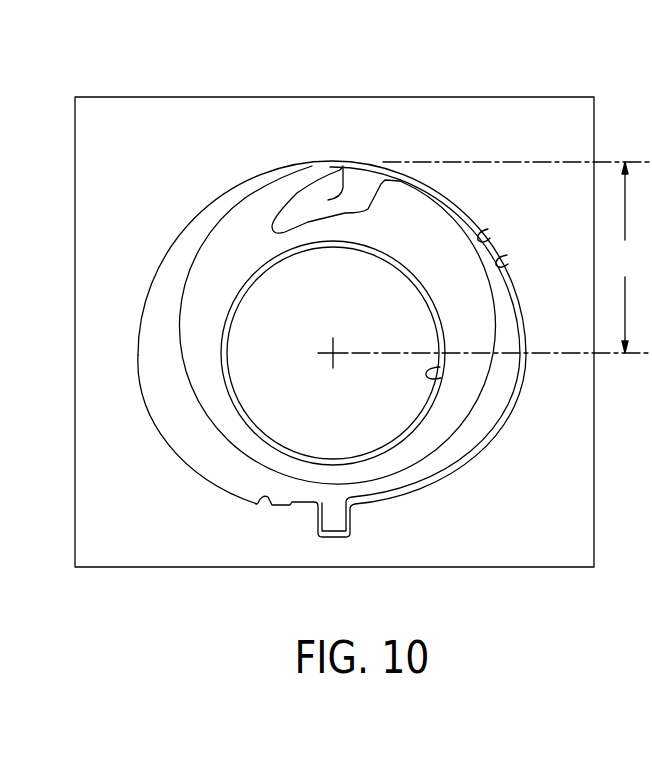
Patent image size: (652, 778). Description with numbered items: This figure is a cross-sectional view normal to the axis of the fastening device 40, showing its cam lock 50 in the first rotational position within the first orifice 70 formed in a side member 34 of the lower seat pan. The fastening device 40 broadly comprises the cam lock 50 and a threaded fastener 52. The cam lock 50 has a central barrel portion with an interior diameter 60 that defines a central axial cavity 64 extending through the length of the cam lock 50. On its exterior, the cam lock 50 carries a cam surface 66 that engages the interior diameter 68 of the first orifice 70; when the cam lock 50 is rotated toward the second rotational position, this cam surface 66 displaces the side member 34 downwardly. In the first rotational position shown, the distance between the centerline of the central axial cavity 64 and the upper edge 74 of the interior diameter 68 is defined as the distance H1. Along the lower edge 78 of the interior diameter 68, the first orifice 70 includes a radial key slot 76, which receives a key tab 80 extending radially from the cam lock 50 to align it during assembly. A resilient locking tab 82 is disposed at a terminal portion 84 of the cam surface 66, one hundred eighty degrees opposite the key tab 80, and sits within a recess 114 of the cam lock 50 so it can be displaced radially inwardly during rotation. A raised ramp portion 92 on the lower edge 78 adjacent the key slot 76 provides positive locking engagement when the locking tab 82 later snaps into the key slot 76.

The side member 34 is at (508, 538).
The fastening device 40 is at (495, 185).
The cam lock 50 is at (255, 452).
The threaded fastener 52 is at (402, 408).
The interior diameter 60 is at (433, 373).
The central axial cavity 64 is at (232, 393).
The cam surface 66 is at (195, 253).
The interior diameter 68 is at (506, 268).
The first orifice 70 is at (480, 240).
The upper edge 74 is at (299, 163).
The key slot 76 is at (325, 538).
The lower edge 78 is at (262, 498).
The key tab 80 is at (342, 508).
The locking tab 82 is at (323, 175).
The terminal portion 84 is at (278, 197).
The raised ramp portion 92 is at (298, 510).
The recess 114 is at (327, 198).
The distance H1 is at (628, 257).